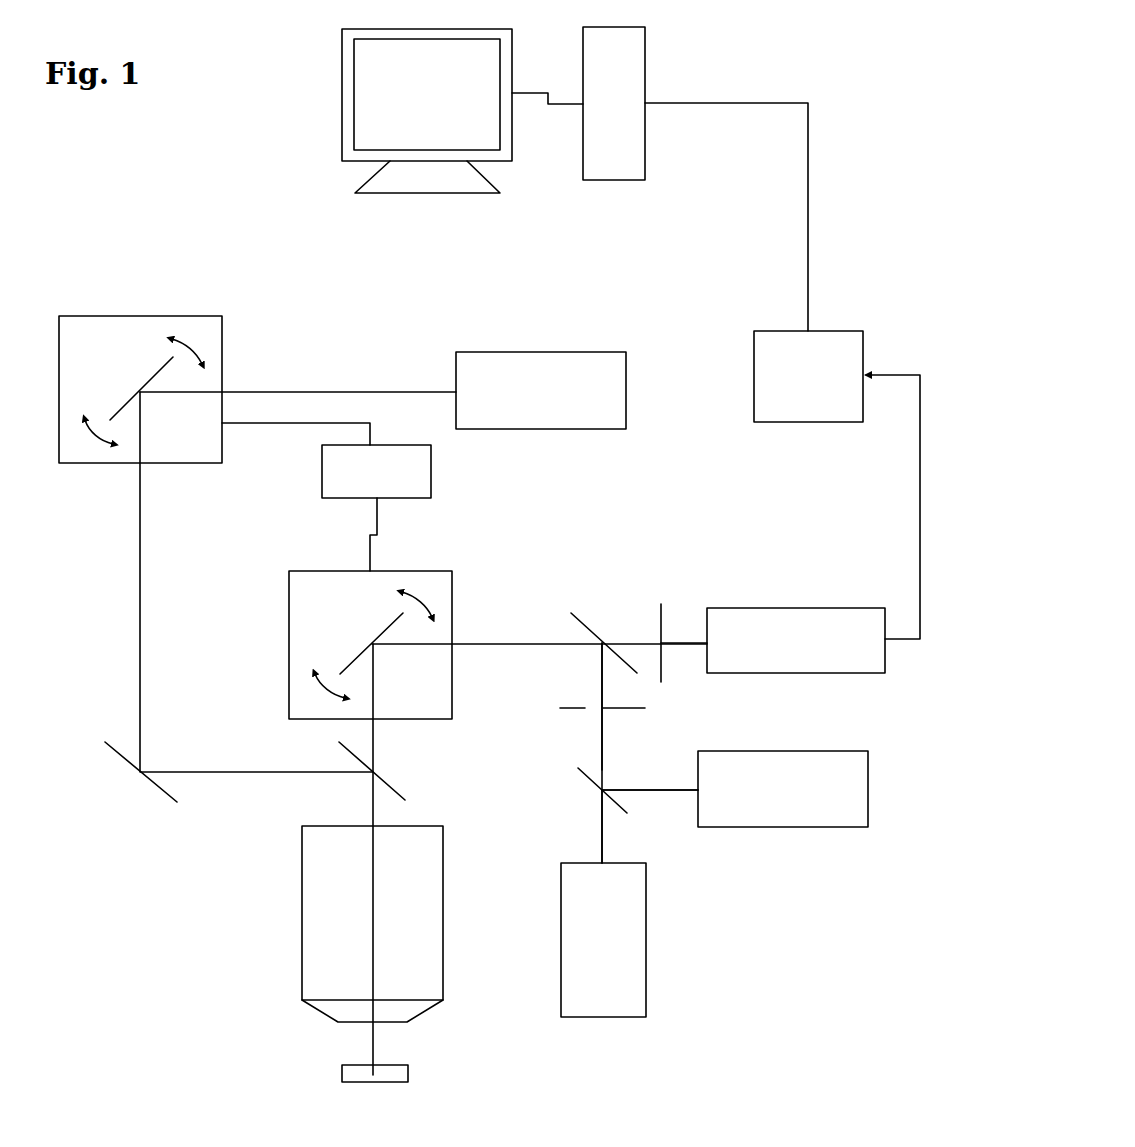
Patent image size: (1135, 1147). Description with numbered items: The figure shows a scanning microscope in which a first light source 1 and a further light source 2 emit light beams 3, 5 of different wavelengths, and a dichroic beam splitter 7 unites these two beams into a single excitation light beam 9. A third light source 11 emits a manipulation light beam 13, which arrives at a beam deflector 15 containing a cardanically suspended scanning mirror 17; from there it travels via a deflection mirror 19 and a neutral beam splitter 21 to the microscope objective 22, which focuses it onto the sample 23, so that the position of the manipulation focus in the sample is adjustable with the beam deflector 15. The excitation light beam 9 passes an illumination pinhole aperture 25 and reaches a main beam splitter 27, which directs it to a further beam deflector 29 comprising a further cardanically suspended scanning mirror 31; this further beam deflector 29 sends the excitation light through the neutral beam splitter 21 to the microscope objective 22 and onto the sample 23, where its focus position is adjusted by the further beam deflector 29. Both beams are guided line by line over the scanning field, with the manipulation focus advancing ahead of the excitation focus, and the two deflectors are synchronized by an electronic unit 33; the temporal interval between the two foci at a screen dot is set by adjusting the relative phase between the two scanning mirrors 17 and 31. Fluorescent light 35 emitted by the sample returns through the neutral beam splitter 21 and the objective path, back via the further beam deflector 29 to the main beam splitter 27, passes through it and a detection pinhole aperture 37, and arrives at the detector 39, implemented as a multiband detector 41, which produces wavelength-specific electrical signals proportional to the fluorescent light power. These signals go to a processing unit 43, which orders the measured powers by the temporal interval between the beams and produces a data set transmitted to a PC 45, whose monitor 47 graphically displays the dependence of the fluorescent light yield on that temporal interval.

The first light source 1 is at (602, 943).
The further light source 2 is at (773, 778).
The light beam 3 is at (603, 833).
The light beam 5 is at (635, 788).
The dichroic beam splitter 7 is at (588, 780).
The excitation light beam 9 is at (600, 770).
The third light source 11 is at (562, 363).
The manipulation light beam 13 is at (340, 390).
The beam deflector 15 is at (213, 336).
The cardanically suspended scanning mirror 17 is at (157, 372).
The deflection mirror 19 is at (130, 761).
The neutral beam splitter 21 is at (347, 750).
The microscope objective 22 is at (327, 919).
The sample 23 is at (363, 1078).
The illumination pinhole aperture 25 is at (585, 710).
The main beam splitter 27 is at (590, 627).
The further beam deflector 29 is at (347, 608).
The further cardanically suspended scanning mirror 31 is at (353, 657).
The electronic unit 33 is at (431, 472).
The fluorescent light 35 is at (677, 642).
The detection pinhole aperture 37 is at (660, 627).
The detector 39 is at (822, 577).
The multiband detector 41 is at (757, 647).
The processing unit 43 is at (827, 353).
The PC 45 is at (625, 57).
The monitor 47 is at (404, 83).